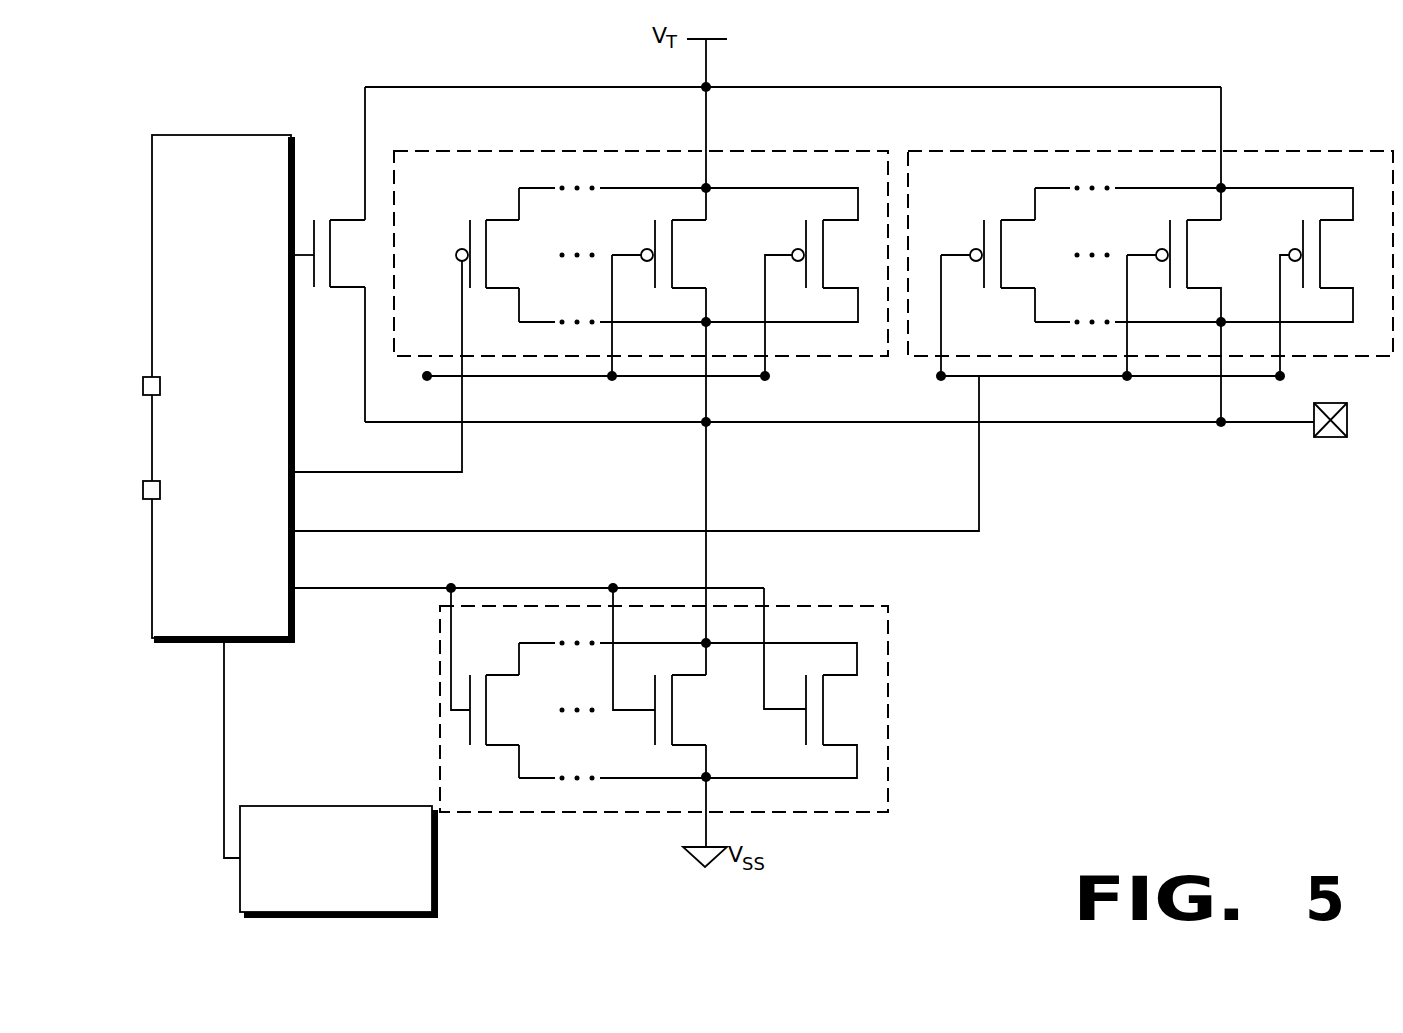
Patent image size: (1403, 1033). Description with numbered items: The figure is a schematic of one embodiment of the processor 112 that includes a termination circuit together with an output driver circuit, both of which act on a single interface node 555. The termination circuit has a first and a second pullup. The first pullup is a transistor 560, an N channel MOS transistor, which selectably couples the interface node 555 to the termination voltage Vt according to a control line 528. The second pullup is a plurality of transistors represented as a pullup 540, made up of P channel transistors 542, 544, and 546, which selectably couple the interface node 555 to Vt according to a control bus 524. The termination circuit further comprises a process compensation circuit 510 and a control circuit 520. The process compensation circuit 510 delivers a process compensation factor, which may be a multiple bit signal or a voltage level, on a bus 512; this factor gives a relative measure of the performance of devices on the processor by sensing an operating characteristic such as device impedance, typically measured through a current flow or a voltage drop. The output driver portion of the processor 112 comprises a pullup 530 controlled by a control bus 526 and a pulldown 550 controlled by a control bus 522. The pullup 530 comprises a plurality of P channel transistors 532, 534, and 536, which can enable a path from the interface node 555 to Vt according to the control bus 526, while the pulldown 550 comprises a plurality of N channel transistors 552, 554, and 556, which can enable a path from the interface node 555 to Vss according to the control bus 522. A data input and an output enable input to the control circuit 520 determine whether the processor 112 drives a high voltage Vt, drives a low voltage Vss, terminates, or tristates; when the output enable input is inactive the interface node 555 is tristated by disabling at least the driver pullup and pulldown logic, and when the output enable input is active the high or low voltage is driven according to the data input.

The processor 112 is at (1234, 722).
The process compensation circuit 510 is at (427, 907).
The bus 512 is at (224, 703).
The control circuit 520 is at (277, 627).
The control bus 522 is at (316, 590).
The control bus 524 is at (350, 532).
The control bus 526 is at (358, 473).
The control line 528 is at (303, 257).
The pullup 530 is at (641, 266).
The P channel transistor 532 is at (535, 268).
The P channel transistor 534 is at (722, 268).
The P channel transistor 536 is at (872, 268).
The pullup 540 is at (1150, 266).
The P channel transistor 542 is at (1050, 268).
The P channel transistor 544 is at (1237, 268).
The P channel transistor 546 is at (1370, 268).
The pulldown 550 is at (664, 700).
The N channel transistor 552 is at (535, 722).
The N channel transistor 554 is at (721, 722).
The N channel transistor 556 is at (872, 722).
The interface node 555 is at (1333, 440).
The transistor 560 is at (380, 267).